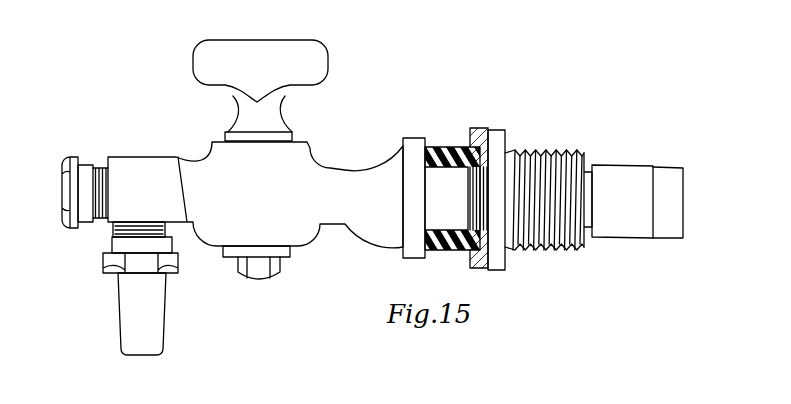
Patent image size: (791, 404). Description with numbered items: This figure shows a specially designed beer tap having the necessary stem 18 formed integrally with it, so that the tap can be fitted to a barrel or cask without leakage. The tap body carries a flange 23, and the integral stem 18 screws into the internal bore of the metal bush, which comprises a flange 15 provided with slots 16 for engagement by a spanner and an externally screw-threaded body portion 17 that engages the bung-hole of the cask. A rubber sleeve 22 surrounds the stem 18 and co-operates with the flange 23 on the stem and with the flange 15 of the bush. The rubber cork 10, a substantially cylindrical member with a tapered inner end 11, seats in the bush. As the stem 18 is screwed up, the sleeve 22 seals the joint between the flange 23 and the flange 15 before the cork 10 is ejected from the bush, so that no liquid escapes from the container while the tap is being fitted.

The rubber cork 10 is at (628, 165).
The tapered inner end 11 is at (663, 170).
The flange 15 is at (497, 129).
The slots 16 is at (480, 129).
The body portion 17 is at (556, 149).
The stem 18 is at (442, 170).
The rubber sleeve 22 is at (454, 150).
The flange 23 is at (414, 138).